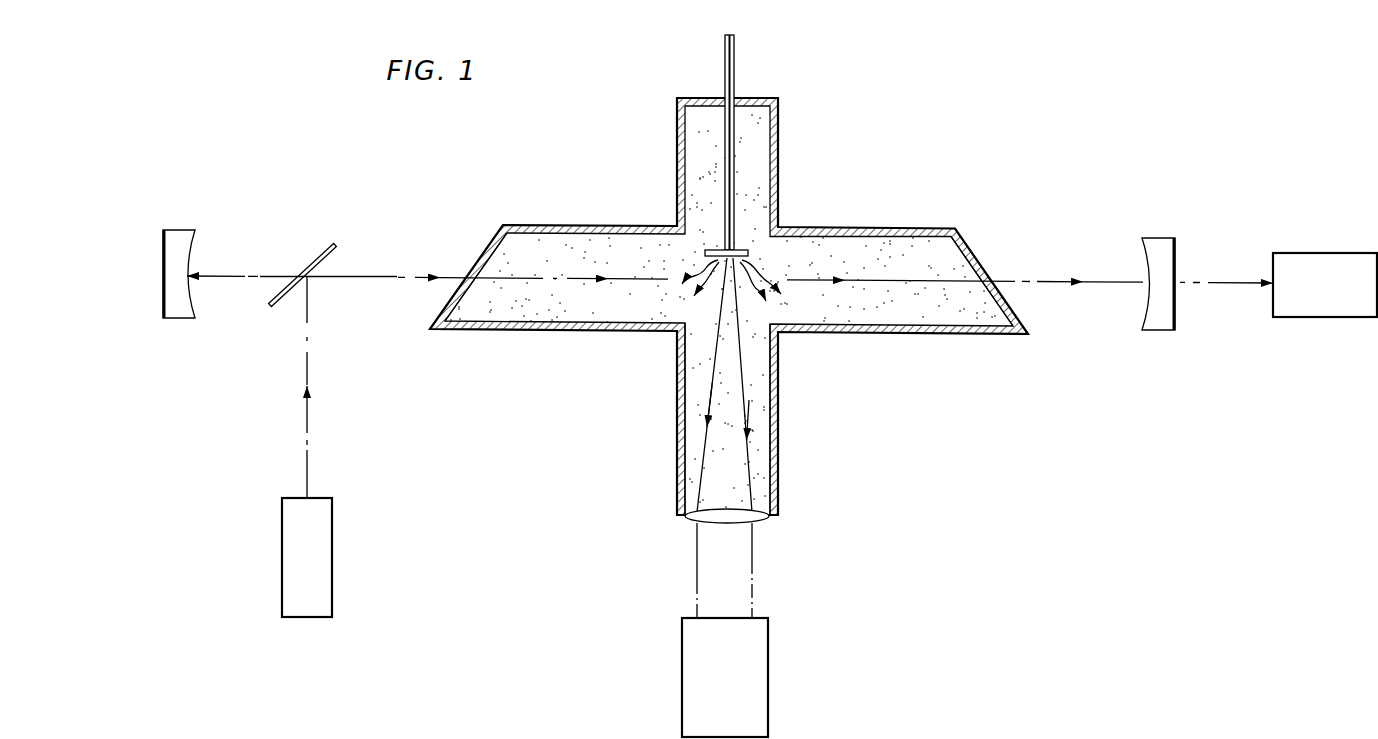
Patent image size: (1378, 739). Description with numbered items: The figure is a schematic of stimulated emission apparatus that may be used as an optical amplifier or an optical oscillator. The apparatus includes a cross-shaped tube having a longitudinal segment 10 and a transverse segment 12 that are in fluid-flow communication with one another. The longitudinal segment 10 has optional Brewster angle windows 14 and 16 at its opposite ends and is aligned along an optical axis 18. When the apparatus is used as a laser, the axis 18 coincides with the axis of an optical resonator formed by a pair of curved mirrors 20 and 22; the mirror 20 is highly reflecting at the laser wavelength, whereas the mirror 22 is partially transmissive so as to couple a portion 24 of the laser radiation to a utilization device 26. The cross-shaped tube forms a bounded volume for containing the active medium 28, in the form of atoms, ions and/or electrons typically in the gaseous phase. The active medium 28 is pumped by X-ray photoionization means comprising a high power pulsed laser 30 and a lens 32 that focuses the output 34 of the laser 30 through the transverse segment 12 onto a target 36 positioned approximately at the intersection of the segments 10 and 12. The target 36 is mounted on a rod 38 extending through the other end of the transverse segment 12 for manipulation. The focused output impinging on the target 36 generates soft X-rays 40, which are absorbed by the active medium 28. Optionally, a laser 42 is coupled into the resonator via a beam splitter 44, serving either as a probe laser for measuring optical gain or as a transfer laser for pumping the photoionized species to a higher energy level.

The longitudinal segment 10 is at (898, 334).
The transverse segment 12 is at (778, 395).
The Brewster angle window 14 is at (493, 247).
The Brewster angle window 16 is at (978, 262).
The optical axis 18 is at (1091, 280).
The curved mirror 20 is at (183, 230).
The curved mirror 22 is at (1172, 237).
The portion of the laser radiation 24 is at (1209, 282).
The utilization device 26 is at (1305, 252).
The active medium 28 is at (597, 245).
The high power pulsed laser 30 is at (768, 660).
The lens 32 is at (760, 522).
The output of laser 34 is at (752, 586).
The target 36 is at (739, 249).
The rod 38 is at (735, 62).
The soft X-rays 40 is at (764, 262).
The laser 42 is at (332, 556).
The beam splitter 44 is at (312, 257).